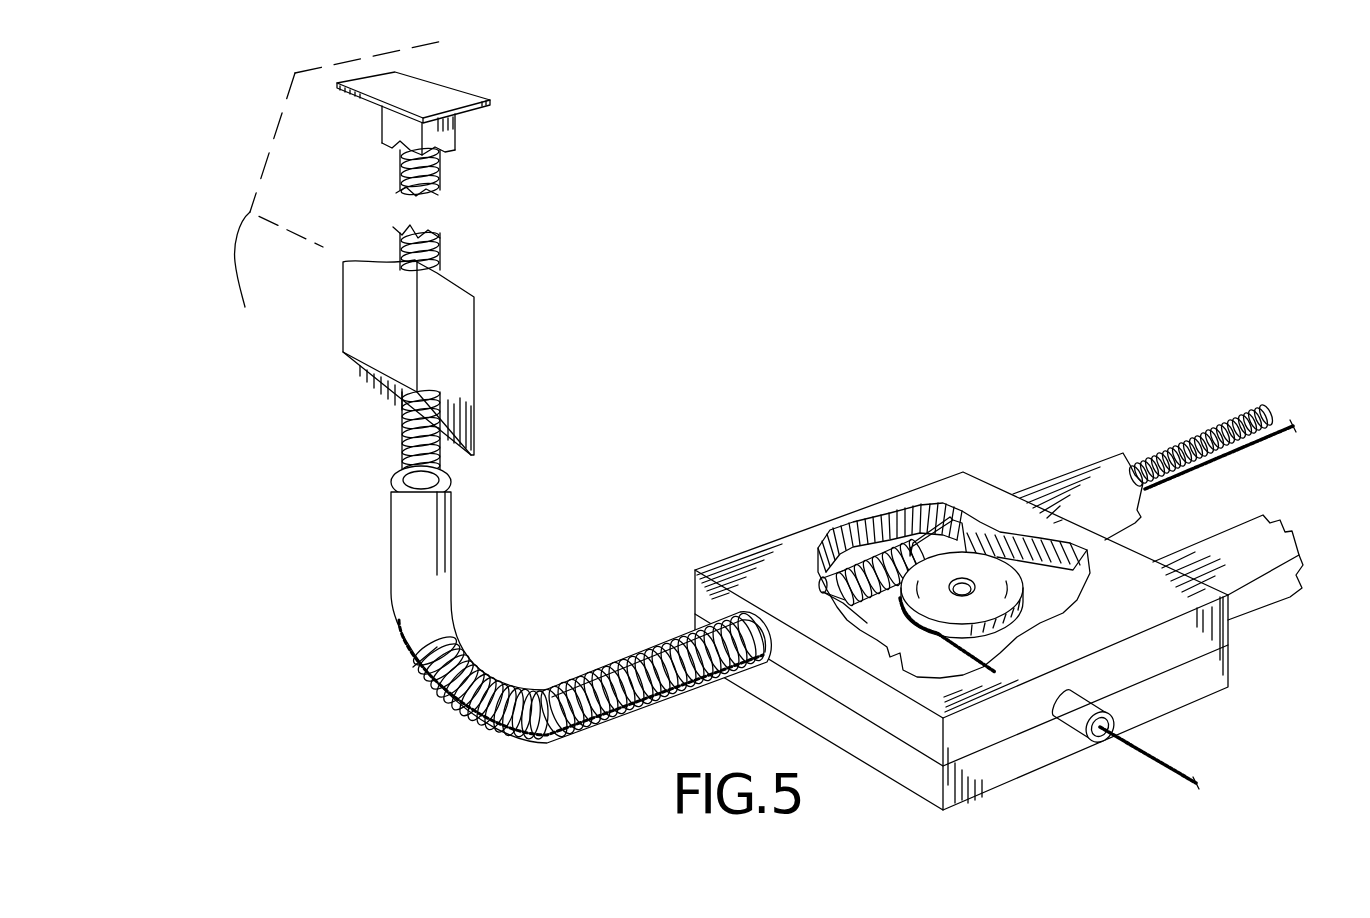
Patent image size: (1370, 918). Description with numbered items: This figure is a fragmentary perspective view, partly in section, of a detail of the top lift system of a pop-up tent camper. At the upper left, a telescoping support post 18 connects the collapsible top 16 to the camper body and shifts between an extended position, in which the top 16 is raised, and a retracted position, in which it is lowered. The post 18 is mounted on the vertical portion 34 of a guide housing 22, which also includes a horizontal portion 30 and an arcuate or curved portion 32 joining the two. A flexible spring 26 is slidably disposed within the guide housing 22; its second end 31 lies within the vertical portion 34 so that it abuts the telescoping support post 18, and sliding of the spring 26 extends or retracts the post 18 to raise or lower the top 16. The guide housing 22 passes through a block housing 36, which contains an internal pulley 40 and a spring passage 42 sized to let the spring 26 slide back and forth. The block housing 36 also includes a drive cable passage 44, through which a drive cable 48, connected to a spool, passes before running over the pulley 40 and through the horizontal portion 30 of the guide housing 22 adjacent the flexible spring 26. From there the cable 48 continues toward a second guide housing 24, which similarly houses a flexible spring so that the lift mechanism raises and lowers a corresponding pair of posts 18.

The collapsible top 16 is at (341, 188).
The second end 31 is at (440, 168).
The telescoping support post 18 is at (474, 330).
The vertical portion 34 is at (450, 483).
The arcuate or curved portion 32 is at (497, 667).
The block housing 36 is at (783, 537).
The internal pulley 40 is at (907, 510).
The spring passage 42 is at (938, 570).
The guide housing 22 is at (1043, 497).
The horizontal portion 30 is at (1080, 470).
The flexible spring 26 is at (1172, 440).
The drive cable 48 is at (1290, 430).
The guide housing 24 is at (1256, 604).
The drive cable passage 44 is at (1103, 740).